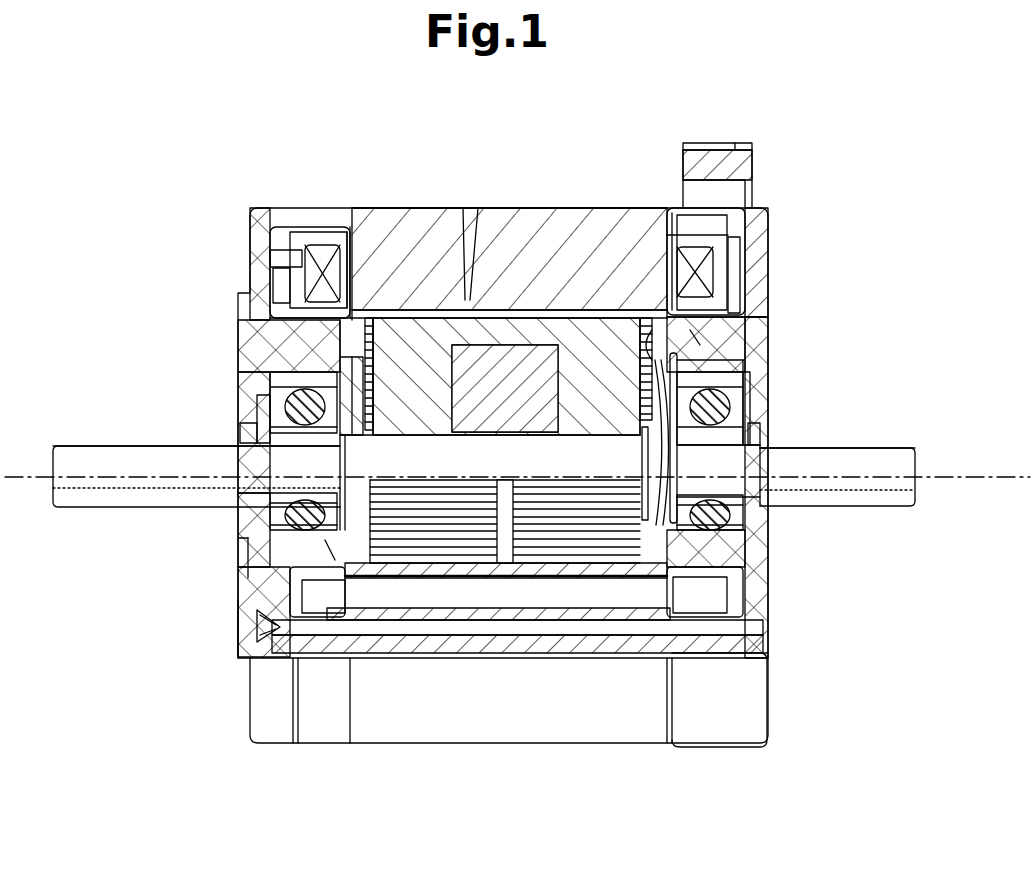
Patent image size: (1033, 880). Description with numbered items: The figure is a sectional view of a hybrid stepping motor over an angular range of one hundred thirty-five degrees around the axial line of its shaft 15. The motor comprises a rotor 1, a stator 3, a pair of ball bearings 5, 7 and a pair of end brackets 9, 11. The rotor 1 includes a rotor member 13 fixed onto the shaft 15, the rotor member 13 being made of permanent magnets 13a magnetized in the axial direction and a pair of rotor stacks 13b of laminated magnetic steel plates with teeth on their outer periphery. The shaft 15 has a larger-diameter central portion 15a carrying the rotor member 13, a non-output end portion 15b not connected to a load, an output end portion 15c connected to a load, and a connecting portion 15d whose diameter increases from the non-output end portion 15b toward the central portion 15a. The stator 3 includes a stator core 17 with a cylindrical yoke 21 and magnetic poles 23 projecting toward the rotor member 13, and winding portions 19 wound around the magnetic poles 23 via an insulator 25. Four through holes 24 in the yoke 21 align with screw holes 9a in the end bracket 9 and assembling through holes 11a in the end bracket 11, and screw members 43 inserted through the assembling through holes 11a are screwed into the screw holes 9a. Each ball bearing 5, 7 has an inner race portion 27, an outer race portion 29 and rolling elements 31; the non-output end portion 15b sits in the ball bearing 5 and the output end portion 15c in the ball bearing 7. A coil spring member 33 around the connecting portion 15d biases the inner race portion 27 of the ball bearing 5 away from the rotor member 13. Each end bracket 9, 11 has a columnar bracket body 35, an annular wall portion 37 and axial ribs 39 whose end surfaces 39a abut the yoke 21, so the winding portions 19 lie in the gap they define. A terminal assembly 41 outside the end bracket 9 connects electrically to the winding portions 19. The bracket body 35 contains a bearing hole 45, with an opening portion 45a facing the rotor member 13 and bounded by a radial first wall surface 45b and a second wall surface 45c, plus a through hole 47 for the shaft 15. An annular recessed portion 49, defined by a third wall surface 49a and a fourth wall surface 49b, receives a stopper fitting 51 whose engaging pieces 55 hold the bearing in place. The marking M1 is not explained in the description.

The rotor 1 is at (255, 433).
The stator 3 is at (413, 242).
The ball bearing 5 is at (740, 363).
The ball bearing 7 is at (345, 380).
The end bracket 9 is at (775, 293).
The screw hole 9a is at (763, 648).
The end bracket 11 is at (242, 246).
The assembling through hole 11a is at (240, 645).
The rotor member 13 is at (540, 380).
The permanent magnet 13a is at (525, 345).
The rotor stack 13b is at (388, 353).
The shaft 15 is at (464, 462).
The central portion 15a is at (484, 458).
The non-output end portion 15b is at (772, 487).
The output end portion 15c is at (270, 462).
The connecting portion 15d is at (598, 628).
The stator core 17 is at (433, 252).
The winding portion 19 is at (322, 208).
The yoke 21 is at (464, 208).
The magnetic pole 23 is at (478, 208).
The through hole 24 is at (517, 655).
The insulator 25 is at (342, 208).
The inner race portion 27 is at (285, 420).
The outer race portion 29 is at (300, 378).
The rolling element 31 is at (267, 393).
The spring member 33 is at (657, 545).
The bracket body 35 is at (300, 330).
The wall portion 37 is at (258, 247).
The rib 39 is at (288, 208).
The end surface 39a is at (362, 210).
The terminal assembly 41 is at (718, 163).
The screw member 43 is at (332, 595).
The bearing hole 45 is at (300, 528).
The opening portion 45a is at (298, 552).
The first wall surface 45b is at (305, 512).
The second wall surface 45c is at (292, 540).
The through hole 47 is at (215, 495).
The recessed portion 49 is at (285, 565).
The third wall surface 49a is at (742, 365).
The fourth wall surface 49b is at (628, 355).
The stopper fitting 51 is at (750, 378).
The engaging piece 55 is at (345, 348).
The axial direction M1 is at (683, 360).